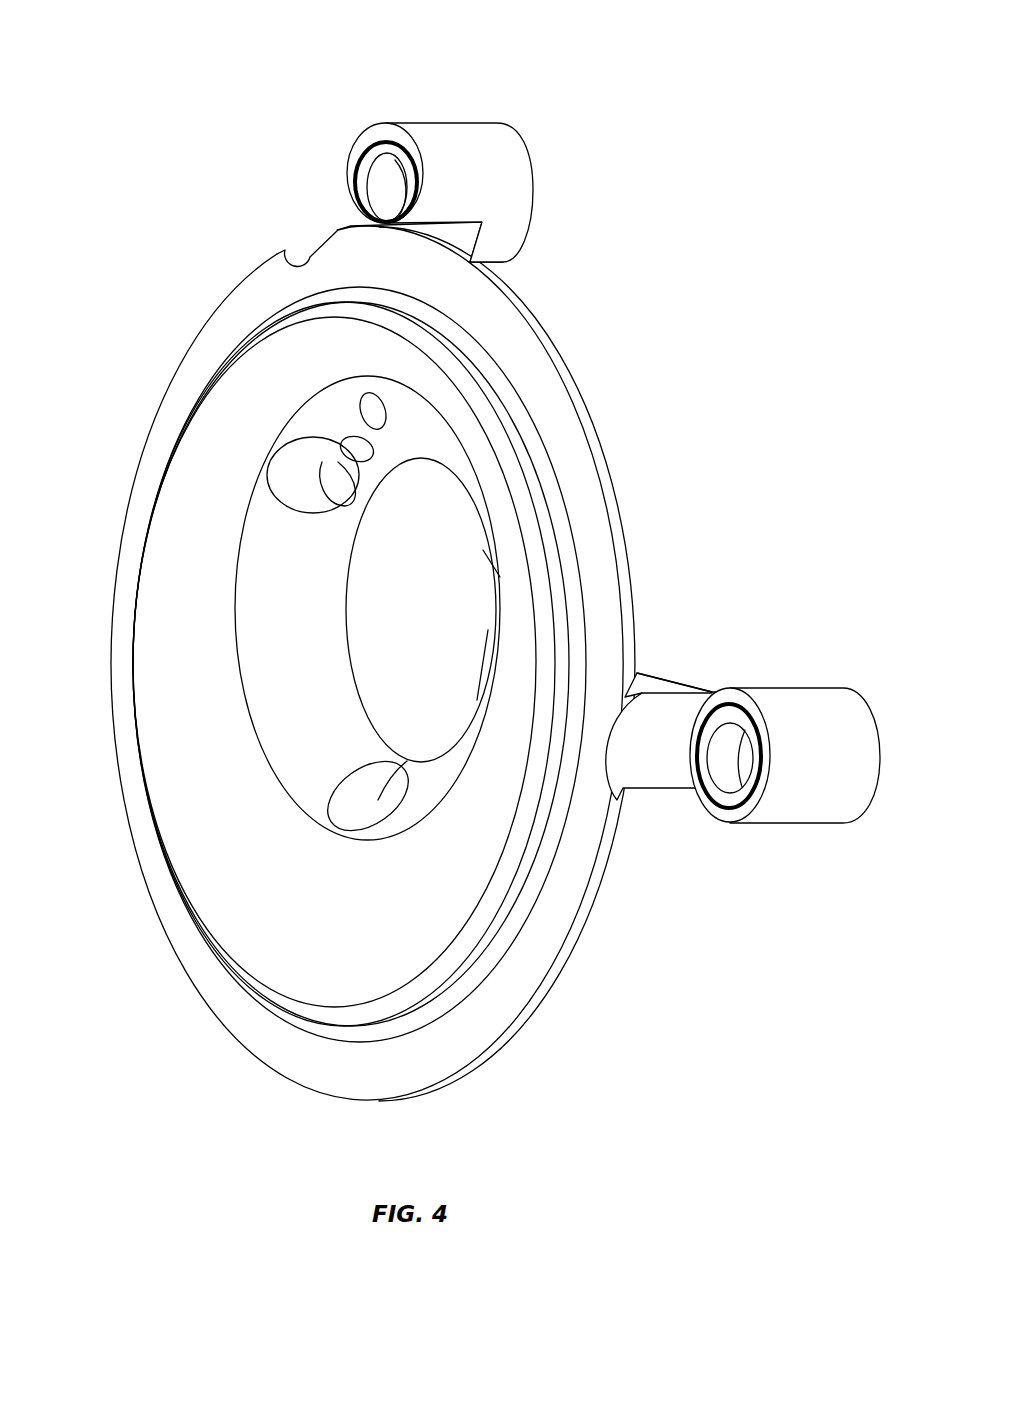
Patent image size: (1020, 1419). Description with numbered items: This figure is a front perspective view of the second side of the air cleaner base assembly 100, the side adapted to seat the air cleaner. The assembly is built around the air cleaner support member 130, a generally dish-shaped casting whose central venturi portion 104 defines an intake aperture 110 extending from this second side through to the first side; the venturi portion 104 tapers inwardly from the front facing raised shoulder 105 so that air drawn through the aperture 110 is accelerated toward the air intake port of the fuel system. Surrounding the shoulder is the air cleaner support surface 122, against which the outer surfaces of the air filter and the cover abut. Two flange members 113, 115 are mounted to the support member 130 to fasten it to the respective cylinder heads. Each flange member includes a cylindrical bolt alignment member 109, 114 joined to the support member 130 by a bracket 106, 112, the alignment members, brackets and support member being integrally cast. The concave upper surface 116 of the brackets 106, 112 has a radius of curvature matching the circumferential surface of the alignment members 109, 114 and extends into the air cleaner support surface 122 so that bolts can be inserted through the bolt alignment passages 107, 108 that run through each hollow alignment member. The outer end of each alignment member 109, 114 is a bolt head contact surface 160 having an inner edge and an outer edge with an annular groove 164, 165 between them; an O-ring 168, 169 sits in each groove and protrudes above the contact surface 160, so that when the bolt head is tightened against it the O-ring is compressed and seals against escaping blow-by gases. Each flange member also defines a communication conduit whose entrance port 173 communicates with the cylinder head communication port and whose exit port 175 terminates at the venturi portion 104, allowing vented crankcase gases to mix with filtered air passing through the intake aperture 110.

The air cleaner base assembly 100 is at (473, 587).
The venturi portion 104 is at (262, 638).
The raised shoulder 105 is at (172, 787).
The bracket 106 is at (452, 235).
The bolt alignment passage 107 is at (377, 184).
The bolt alignment passage 108 is at (725, 765).
The cylindrical bolt alignment member 109 is at (462, 143).
The intake aperture 110 is at (440, 505).
The bracket 112 is at (657, 683).
The flange member 113 is at (431, 157).
The cylindrical bolt alignment member 114 is at (820, 707).
The flange member 115 is at (756, 755).
The upper surface 116 is at (673, 717).
The air cleaner support surface 122 is at (490, 1015).
The air cleaner support member 130 is at (166, 935).
The bolt head contact surface 160 is at (374, 138).
The annular groove 164 is at (388, 138).
The annular groove 165 is at (705, 810).
The O-ring 168 is at (362, 155).
The O-ring 169 is at (748, 812).
The entrance port 173 is at (727, 690).
The exit port 175 is at (352, 447).